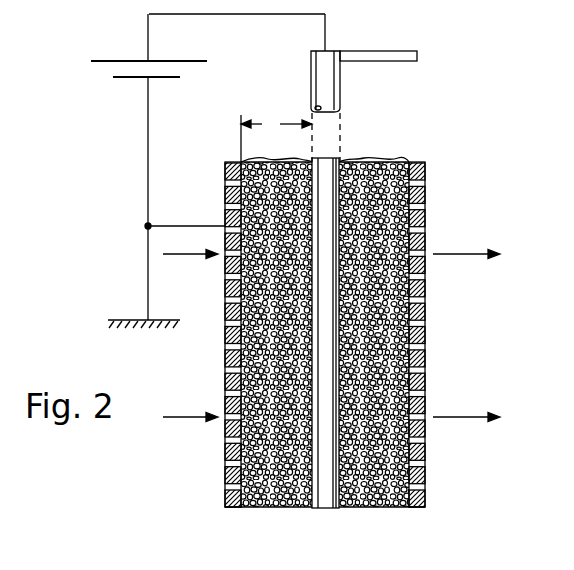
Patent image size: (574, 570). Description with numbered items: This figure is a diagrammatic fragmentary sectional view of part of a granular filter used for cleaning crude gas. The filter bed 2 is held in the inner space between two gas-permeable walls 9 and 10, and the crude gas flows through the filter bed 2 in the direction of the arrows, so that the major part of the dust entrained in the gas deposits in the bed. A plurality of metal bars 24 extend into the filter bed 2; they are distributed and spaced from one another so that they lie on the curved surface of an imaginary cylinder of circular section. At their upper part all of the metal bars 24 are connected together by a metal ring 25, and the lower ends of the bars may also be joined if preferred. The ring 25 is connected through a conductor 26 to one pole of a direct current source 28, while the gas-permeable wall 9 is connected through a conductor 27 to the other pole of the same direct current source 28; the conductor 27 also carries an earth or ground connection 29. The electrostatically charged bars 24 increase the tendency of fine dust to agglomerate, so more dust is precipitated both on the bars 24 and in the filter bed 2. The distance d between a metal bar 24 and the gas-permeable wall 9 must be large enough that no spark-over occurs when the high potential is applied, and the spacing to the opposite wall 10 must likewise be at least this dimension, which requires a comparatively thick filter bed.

The filter bed 2 is at (420, 162).
The gas-permeable wall 9 is at (225, 455).
The gas-permeable wall 10 is at (426, 313).
The metal bar 24 is at (325, 511).
The metal ring 25 is at (367, 60).
The connecting lead 26 is at (223, 14).
The conductor 27 is at (148, 153).
The direct current source 28 is at (108, 62).
The ground connection 29 is at (148, 265).